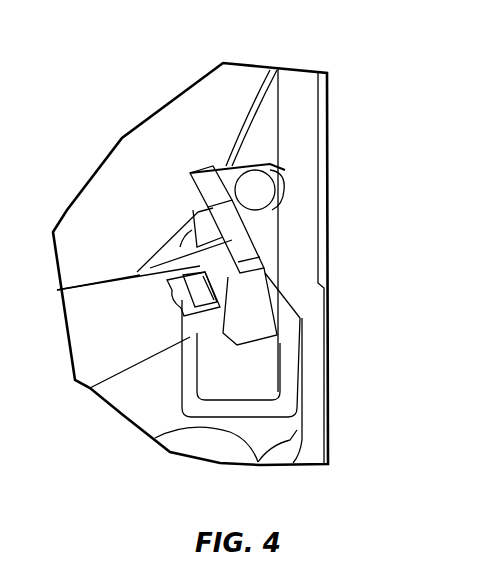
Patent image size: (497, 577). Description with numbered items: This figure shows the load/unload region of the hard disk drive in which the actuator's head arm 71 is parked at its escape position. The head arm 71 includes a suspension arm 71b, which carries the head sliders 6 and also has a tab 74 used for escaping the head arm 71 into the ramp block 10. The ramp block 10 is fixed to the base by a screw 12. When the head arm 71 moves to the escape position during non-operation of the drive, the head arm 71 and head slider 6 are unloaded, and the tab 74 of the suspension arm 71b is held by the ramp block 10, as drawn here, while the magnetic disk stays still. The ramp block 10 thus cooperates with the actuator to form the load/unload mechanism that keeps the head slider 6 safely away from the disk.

The head slider 6 is at (205, 320).
The ramp block 10 is at (197, 180).
The screw 12 is at (257, 195).
The head arm 71 is at (130, 368).
The suspension arm 71b is at (100, 288).
The tab 74 is at (242, 285).